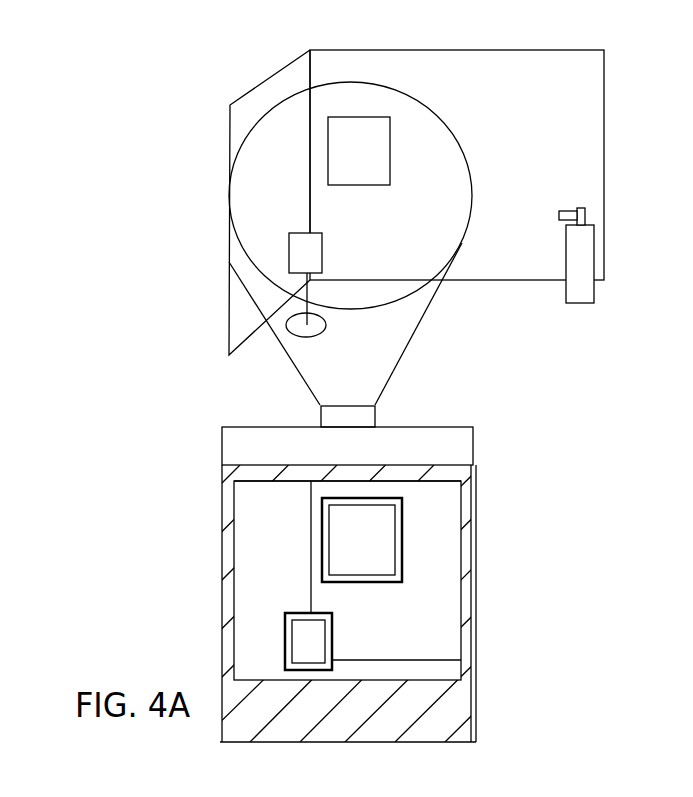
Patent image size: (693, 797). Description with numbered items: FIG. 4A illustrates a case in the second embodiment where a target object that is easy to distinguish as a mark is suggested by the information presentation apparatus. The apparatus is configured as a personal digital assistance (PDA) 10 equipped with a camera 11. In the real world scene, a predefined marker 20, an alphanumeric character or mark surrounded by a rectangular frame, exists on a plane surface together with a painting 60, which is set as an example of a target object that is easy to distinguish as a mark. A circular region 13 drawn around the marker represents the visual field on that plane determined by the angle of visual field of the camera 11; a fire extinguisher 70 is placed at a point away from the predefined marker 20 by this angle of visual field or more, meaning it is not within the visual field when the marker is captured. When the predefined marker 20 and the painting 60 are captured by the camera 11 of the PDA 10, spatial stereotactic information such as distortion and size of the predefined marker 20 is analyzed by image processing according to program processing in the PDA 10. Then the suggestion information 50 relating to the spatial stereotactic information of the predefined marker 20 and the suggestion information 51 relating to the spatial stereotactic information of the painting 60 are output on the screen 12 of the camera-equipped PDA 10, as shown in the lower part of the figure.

The personal digital assistance (PDA) 10 is at (352, 742).
The camera 11 is at (365, 418).
The screen 12 is at (447, 585).
The angle of visual field 13 is at (288, 98).
The predefined marker 20 is at (322, 252).
The suggestion information 50 is at (333, 640).
The suggestion information 51 is at (403, 547).
The painting 60 is at (371, 117).
The fire extinguisher 70 is at (595, 292).